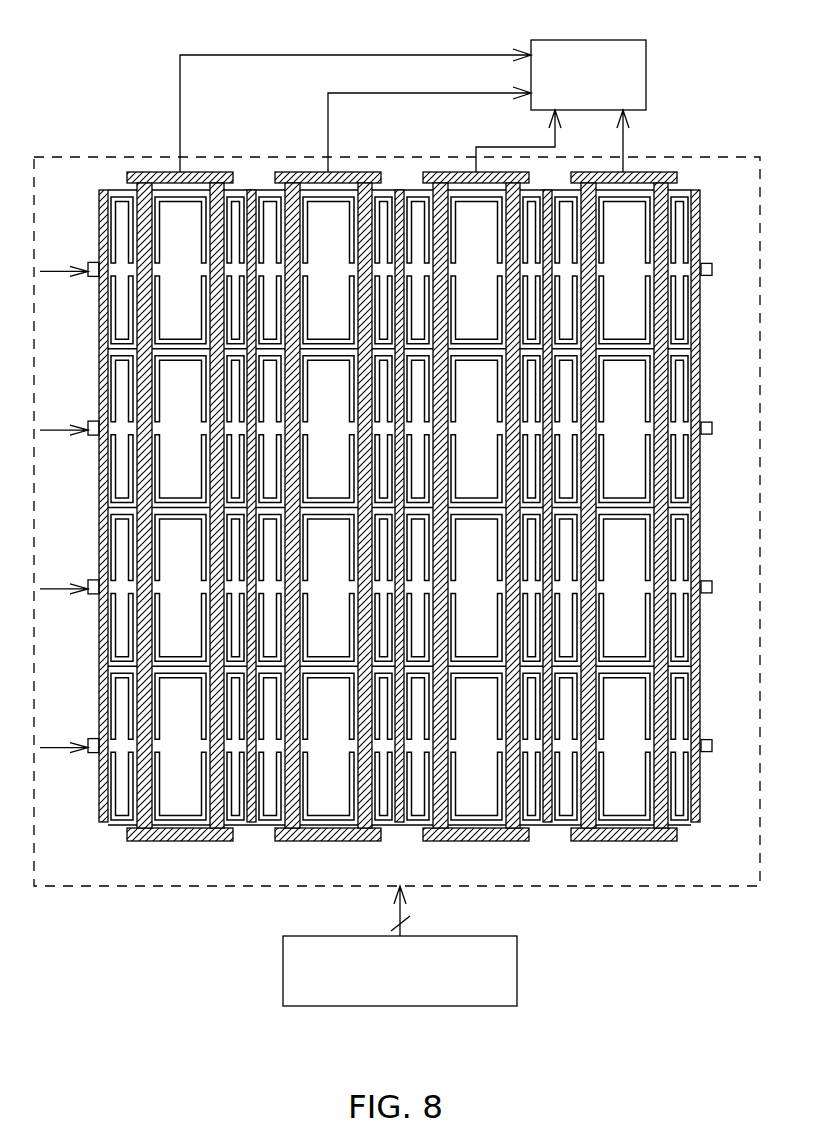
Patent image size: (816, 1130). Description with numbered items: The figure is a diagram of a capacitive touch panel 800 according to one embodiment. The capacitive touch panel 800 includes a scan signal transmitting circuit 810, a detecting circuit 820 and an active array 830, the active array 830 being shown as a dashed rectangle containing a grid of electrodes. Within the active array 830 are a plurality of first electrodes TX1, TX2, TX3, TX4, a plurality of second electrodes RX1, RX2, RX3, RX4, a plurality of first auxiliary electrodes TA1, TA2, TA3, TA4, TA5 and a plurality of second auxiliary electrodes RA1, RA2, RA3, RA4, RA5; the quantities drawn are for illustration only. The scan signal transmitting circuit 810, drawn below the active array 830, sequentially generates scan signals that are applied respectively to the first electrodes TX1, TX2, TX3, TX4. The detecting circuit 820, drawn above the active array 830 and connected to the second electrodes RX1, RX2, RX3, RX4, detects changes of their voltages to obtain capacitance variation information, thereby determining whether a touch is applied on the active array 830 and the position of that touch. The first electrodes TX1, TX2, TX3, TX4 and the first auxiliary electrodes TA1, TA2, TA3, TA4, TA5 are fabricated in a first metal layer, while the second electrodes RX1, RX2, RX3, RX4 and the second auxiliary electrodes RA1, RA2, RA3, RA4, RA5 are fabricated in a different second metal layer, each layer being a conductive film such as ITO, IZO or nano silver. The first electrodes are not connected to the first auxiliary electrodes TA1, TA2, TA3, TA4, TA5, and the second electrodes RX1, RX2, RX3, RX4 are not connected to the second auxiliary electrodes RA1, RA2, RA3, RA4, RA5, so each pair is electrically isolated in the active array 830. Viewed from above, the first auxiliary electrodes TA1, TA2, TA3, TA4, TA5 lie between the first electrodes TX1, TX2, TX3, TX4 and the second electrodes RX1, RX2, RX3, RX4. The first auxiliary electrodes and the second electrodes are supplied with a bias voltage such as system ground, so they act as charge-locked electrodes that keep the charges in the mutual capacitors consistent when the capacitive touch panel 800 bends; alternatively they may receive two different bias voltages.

The capacitive touch panel 800 is at (160, 86).
The scan signal transmitting circuit 810 is at (283, 971).
The detecting circuit 820 is at (588, 40).
The active array 830 is at (592, 886).
The second auxiliary electrode RA1 is at (99, 795).
The second auxiliary electrode RA2 is at (251, 190).
The second auxiliary electrode RA3 is at (399, 190).
The second auxiliary electrode RA4 is at (548, 822).
The second auxiliary electrode RA5 is at (696, 822).
The second electrode RX1 is at (205, 842).
The second electrode RX2 is at (318, 842).
The second electrode RX3 is at (453, 842).
The second electrode RX4 is at (585, 842).
The first auxiliary electrode TA1 is at (694, 190).
The first auxiliary electrode TA2 is at (694, 349).
The first auxiliary electrode TA3 is at (694, 508).
The first auxiliary electrode TA4 is at (694, 666).
The first auxiliary electrode TA5 is at (701, 826).
The first electrode TX1 is at (712, 269).
The first electrode TX2 is at (712, 428).
The first electrode TX3 is at (712, 587).
The first electrode TX4 is at (712, 746).